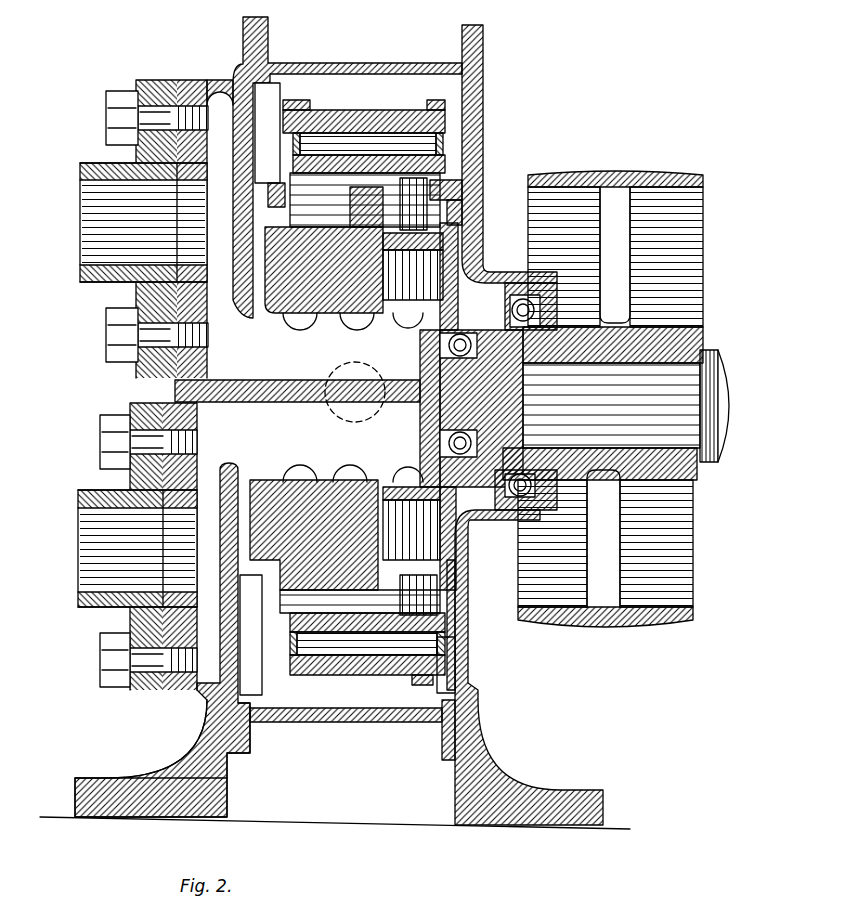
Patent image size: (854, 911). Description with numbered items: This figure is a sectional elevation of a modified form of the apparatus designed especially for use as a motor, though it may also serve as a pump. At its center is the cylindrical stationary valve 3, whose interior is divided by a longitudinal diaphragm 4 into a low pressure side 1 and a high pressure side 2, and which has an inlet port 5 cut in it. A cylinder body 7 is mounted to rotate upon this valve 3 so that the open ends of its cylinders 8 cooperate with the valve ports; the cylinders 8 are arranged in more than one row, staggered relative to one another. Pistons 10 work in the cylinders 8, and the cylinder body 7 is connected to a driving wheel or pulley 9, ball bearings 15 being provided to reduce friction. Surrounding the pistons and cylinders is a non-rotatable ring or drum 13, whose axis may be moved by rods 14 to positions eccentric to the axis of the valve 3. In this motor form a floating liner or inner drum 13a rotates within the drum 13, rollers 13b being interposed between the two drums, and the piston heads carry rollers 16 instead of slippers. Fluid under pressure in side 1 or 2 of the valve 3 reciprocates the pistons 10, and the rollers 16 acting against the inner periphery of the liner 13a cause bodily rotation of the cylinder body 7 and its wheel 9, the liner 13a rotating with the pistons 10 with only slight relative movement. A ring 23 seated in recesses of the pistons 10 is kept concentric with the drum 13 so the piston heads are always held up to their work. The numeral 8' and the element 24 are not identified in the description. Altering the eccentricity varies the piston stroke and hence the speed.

The low pressure side 1 is at (194, 623).
The high pressure side 2 is at (345, 385).
The stationary valve 3 is at (256, 300).
The longitudinal diaphragm 4 is at (286, 381).
The inlet port 5 is at (440, 346).
The cylinder body 7 is at (313, 303).
The cylinders 8 is at (411, 396).
The drive shaft 8' is at (626, 425).
The driving wheel or pulley 9 is at (690, 253).
The pistons 10 is at (456, 220).
The ring or drum 13 is at (362, 120).
The floating liner or inner drum 13a is at (326, 624).
The rollers 13b is at (322, 680).
The rods 14 is at (430, 360).
The ball bearings 15 is at (518, 300).
The rollers 16 is at (450, 175).
The ring 23 is at (276, 185).
The roller 24 is at (352, 318).